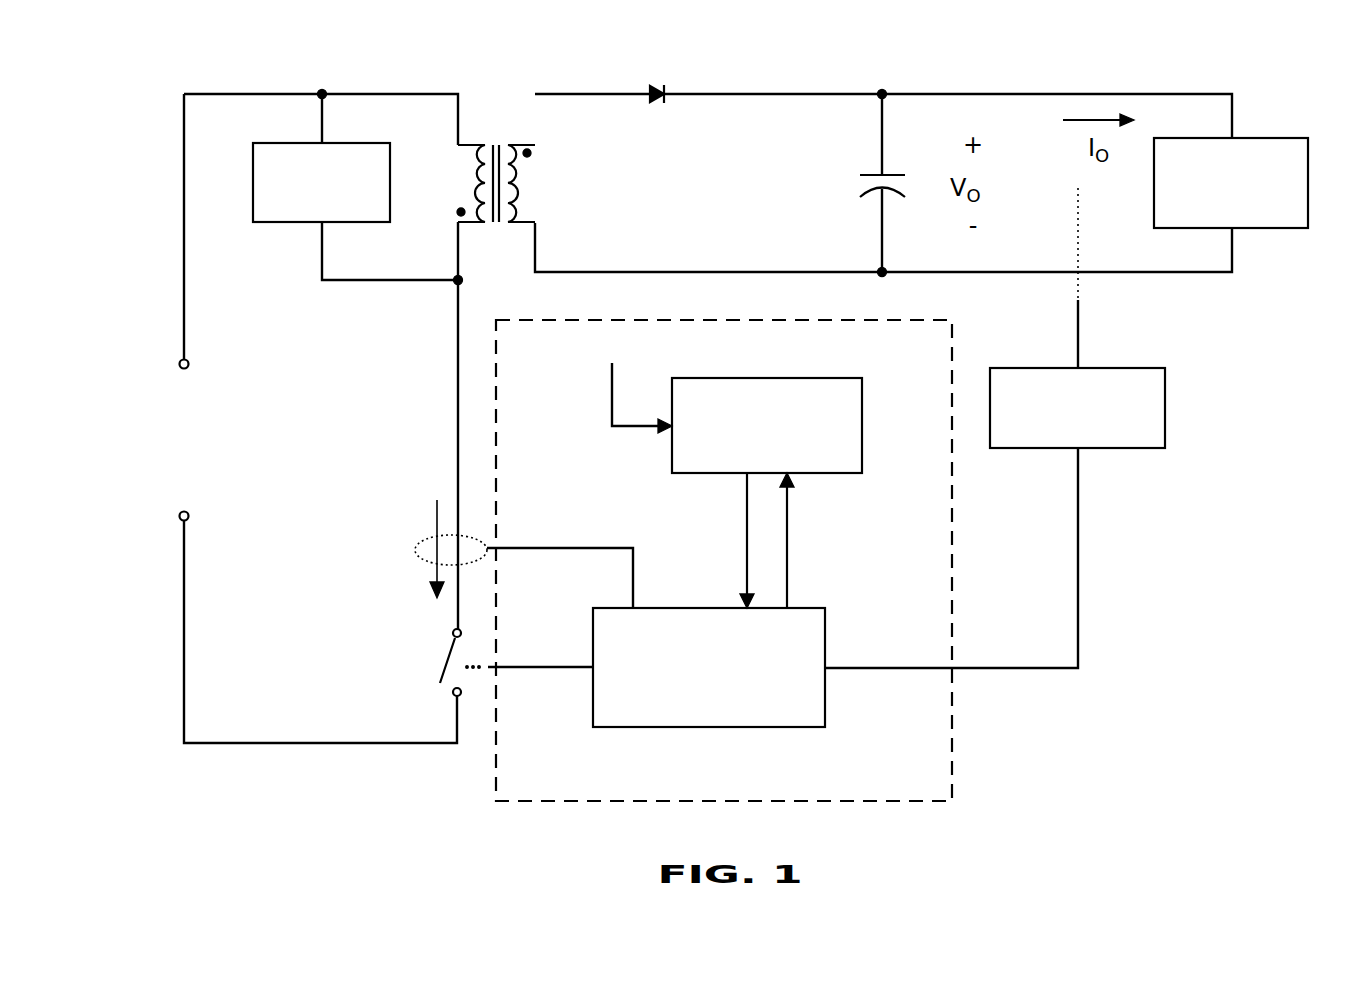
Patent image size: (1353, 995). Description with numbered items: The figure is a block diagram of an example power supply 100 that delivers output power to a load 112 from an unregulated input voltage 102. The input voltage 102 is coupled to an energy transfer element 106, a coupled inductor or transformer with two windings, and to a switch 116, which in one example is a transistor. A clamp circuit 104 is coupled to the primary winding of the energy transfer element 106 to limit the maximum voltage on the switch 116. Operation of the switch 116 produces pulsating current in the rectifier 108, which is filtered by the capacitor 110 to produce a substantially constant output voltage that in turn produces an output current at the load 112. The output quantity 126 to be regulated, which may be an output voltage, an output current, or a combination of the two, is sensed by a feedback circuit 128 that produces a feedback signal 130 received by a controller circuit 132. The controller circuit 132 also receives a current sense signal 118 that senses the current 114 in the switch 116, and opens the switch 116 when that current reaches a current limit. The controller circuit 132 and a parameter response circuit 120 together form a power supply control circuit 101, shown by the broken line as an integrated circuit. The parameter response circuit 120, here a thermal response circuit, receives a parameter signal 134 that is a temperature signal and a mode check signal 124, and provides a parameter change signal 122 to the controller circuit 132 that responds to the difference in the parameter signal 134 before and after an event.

The power converter 100 is at (66, 150).
The power supply control circuit 101 is at (953, 755).
The input voltage VIN 102 is at (141, 357).
The clamp circuit 104 is at (303, 232).
The energy transfer element T1 106 is at (497, 232).
The rectifier D1 108 is at (660, 115).
The capacitor C1 110 is at (870, 165).
The load 112 is at (1280, 132).
The current ID 114 is at (423, 495).
The switch S1 116 is at (481, 640).
The current sense signal 118 is at (590, 553).
The parameter response circuit 120 is at (867, 413).
The parameter change signal UΔT 122 is at (733, 527).
The mode check signal 124 is at (795, 527).
The output quantity UO 126 is at (1065, 347).
The feedback circuit 128 is at (1168, 408).
The feedback signal UFB 130 is at (1083, 523).
The controller circuit 132 is at (722, 728).
The parameter signal 134 is at (600, 392).